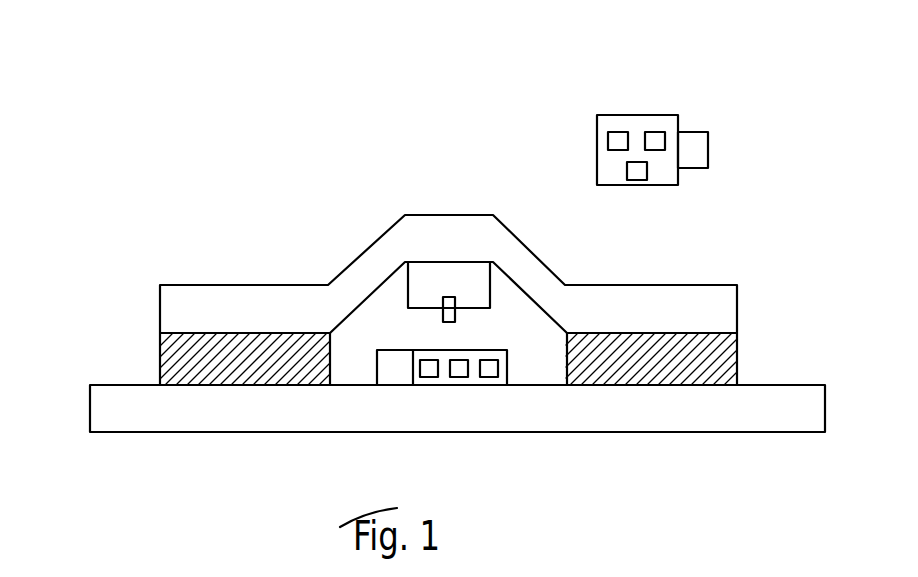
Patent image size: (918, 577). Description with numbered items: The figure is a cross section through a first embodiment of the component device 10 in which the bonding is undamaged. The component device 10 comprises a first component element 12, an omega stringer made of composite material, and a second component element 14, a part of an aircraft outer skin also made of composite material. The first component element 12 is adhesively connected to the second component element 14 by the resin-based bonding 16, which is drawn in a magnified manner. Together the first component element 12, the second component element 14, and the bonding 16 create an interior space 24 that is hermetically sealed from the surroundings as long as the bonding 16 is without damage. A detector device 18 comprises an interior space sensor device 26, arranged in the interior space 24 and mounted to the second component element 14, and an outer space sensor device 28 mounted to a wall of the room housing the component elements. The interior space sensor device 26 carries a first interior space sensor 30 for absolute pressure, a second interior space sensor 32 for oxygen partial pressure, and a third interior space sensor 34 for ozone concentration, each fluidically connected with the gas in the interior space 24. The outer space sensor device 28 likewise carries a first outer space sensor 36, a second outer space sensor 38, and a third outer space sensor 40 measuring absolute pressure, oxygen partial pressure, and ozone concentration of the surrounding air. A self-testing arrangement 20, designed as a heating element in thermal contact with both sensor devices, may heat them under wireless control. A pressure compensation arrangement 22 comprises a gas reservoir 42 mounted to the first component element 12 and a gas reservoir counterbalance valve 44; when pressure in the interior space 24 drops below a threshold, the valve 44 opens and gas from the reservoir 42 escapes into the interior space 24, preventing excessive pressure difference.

The component device 10 is at (216, 138).
The first component element 12 is at (178, 303).
The second component element 14 is at (133, 418).
The bonding 16 is at (178, 357).
The detector device 18 is at (486, 338).
The self-testing arrangement 20 is at (378, 387).
The pressure compensation arrangement 22 is at (406, 301).
The interior space 24 is at (403, 333).
The interior space sensor device 26 is at (508, 370).
The outer space sensor device 28 is at (611, 115).
The first interior space sensor 30 is at (430, 372).
The second interior space sensor 32 is at (457, 372).
The third interior space sensor 34 is at (487, 372).
The first outer space sensor 36 is at (618, 138).
The second outer space sensor 38 is at (655, 135).
The third outer space sensor 40 is at (640, 185).
The gas reservoir 42 is at (420, 270).
The gas reservoir counterbalance valve 44 is at (448, 298).